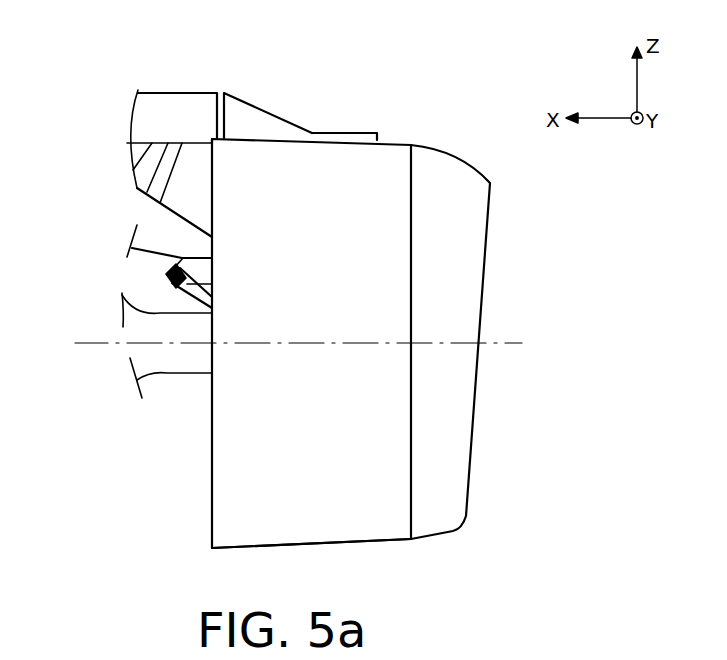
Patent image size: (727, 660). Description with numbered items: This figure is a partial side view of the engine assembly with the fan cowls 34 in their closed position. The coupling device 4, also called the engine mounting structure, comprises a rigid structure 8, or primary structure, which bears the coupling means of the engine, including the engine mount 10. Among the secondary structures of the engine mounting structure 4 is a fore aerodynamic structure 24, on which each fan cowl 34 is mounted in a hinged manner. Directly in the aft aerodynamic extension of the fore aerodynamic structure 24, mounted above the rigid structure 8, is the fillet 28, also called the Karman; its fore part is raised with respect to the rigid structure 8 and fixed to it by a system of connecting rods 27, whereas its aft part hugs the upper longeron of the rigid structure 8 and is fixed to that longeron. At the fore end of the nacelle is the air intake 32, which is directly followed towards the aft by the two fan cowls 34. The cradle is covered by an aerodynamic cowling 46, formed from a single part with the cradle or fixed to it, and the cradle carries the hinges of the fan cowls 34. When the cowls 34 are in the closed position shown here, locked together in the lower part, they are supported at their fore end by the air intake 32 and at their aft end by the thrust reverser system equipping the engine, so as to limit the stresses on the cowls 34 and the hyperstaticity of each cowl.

The coupling device 4 is at (134, 203).
The rigid structure 8 is at (145, 230).
The engine mount 10 is at (172, 267).
The fore aerodynamic structure 24 is at (258, 110).
The system of connecting rods 27 is at (165, 160).
The fillet 28 is at (198, 100).
The air intake 32 is at (473, 190).
The fan cowls 34 is at (227, 522).
The aerodynamic cowling 46 is at (298, 122).